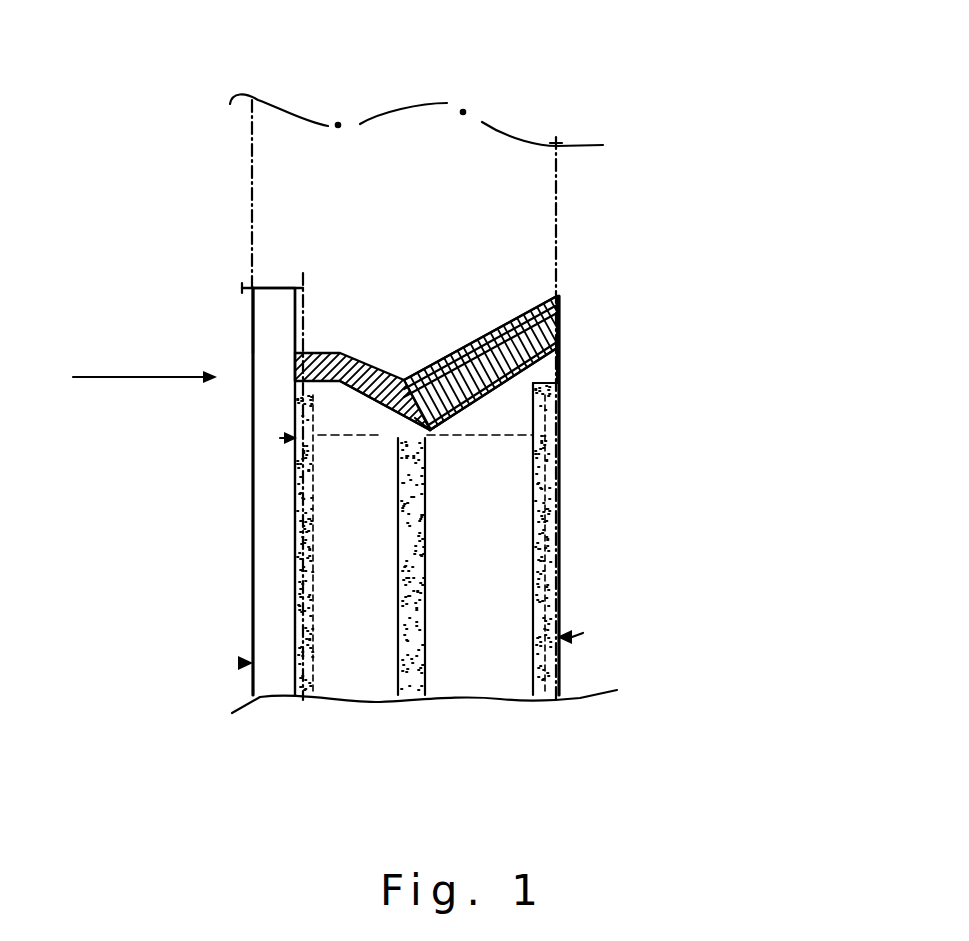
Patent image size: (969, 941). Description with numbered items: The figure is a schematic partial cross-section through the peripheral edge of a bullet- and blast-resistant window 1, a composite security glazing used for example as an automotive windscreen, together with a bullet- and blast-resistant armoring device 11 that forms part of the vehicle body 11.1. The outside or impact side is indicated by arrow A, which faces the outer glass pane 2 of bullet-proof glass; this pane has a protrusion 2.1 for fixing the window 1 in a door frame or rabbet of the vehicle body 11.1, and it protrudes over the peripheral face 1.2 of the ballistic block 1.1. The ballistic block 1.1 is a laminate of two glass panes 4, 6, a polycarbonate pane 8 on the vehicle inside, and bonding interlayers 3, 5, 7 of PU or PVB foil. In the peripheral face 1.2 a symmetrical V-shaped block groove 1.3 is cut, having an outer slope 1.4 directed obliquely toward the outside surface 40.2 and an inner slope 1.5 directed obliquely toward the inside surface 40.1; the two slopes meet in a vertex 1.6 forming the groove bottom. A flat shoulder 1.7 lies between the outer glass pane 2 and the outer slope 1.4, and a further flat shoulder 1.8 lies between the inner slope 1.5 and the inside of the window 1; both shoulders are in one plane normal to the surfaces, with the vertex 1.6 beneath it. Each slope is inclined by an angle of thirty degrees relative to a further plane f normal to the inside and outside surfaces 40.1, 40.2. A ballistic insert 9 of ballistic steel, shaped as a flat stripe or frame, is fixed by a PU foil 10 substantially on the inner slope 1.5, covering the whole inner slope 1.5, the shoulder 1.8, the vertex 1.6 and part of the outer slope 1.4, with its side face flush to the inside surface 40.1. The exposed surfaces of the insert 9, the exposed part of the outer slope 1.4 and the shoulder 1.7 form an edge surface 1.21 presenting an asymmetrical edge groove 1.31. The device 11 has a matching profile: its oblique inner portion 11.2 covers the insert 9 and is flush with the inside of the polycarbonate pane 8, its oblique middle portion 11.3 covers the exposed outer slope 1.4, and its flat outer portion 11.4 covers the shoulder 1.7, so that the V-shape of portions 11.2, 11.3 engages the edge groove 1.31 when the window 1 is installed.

The bullet- and blast-resistant window 1 is at (293, 520).
The ballistic block 1.1 is at (545, 652).
The peripheral face 1.2 is at (333, 377).
The block groove 1.3 is at (458, 402).
The edge groove 1.31 is at (415, 386).
The edge surface 1.21 is at (472, 346).
The outer slope 1.4 is at (370, 416).
The inner slope 1.5 is at (470, 417).
The vertex 1.6 is at (440, 438).
The flat shoulder 1.7 is at (293, 422).
The flat shoulder 1.8 is at (560, 400).
The outer glass pane 2 is at (267, 615).
The protrusion 2.1 is at (278, 310).
The bonding interlayer 3 is at (293, 465).
The glass pane 4 is at (343, 680).
The bonding interlayer 5 is at (410, 680).
The glass pane 6 is at (492, 683).
The bonding interlayer 7 is at (547, 470).
The polycarbonate pane 8 is at (552, 573).
The ballistic insert 9 is at (560, 343).
The PU foil 10 is at (560, 370).
The armoring device 11 is at (560, 293).
The vehicle body 11.1 is at (360, 143).
The oblique inner portion 11.2 is at (492, 330).
The oblique middle portion 11.3 is at (452, 360).
The flat outer portion 11.4 is at (293, 373).
The inside surface 40.1 is at (583, 633).
The outside surface 40.2 is at (238, 665).
The arrow indicating impact side A is at (145, 363).
The further plane f is at (284, 438).